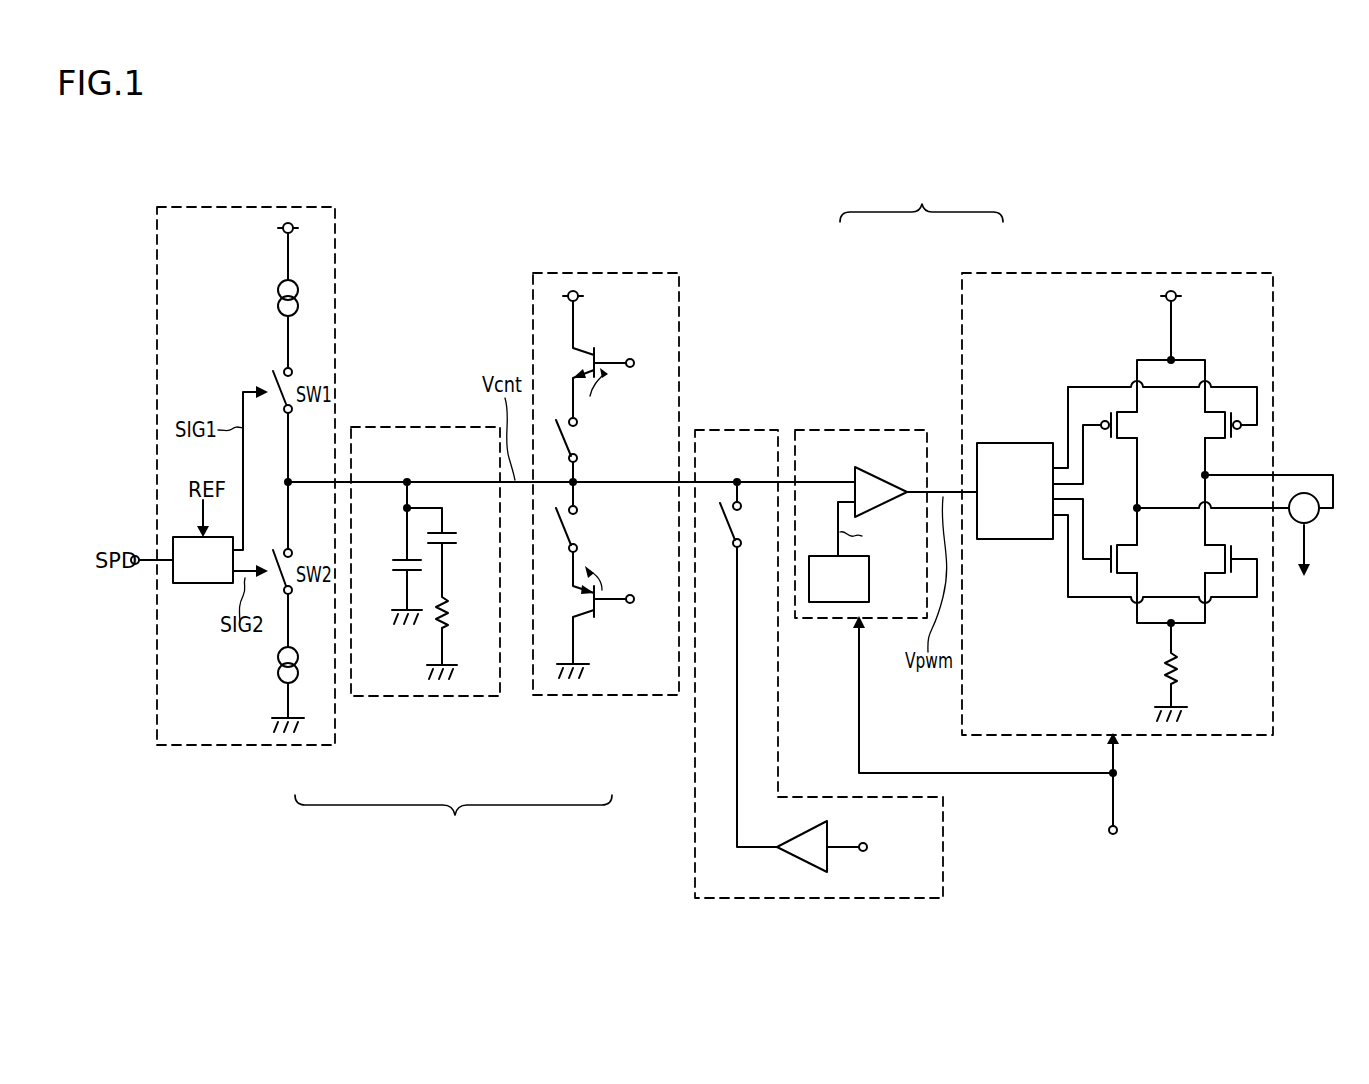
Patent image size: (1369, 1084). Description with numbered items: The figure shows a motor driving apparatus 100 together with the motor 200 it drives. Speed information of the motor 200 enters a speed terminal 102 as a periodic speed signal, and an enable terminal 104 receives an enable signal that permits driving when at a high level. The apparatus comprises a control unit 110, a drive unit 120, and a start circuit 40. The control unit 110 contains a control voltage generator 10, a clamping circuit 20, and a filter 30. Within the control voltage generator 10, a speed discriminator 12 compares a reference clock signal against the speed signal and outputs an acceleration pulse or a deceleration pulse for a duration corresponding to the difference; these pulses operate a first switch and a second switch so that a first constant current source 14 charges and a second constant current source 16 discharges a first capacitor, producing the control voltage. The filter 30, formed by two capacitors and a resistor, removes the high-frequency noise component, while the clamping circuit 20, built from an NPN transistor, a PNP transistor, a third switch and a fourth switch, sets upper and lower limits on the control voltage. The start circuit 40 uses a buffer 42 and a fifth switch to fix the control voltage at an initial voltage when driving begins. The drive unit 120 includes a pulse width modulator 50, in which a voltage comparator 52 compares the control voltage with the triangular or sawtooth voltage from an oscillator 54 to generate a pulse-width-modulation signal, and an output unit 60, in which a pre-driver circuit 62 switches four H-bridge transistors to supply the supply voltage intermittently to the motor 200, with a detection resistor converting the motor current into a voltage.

The control voltage generator 10 is at (313, 748).
The speed discriminator 12 is at (193, 585).
The first constant current source 14 is at (276, 303).
The second constant current source 16 is at (276, 670).
The clamping circuit 20 is at (605, 698).
The filter 30 is at (425, 698).
The start circuit 40 is at (846, 664).
The buffer 42 is at (790, 858).
The pulse width modulator 50 is at (861, 422).
The voltage comparator 52 is at (880, 478).
The oscillator 54 is at (870, 580).
The output unit 60 is at (1147, 480).
The pre-driver circuit 62 is at (1012, 545).
The motor driving apparatus 100 is at (736, 950).
The speed terminal 102 is at (135, 565).
The enable terminal 104 is at (1118, 830).
The control unit 110 is at (453, 819).
The drive unit 120 is at (921, 201).
The motor 200 is at (1316, 520).